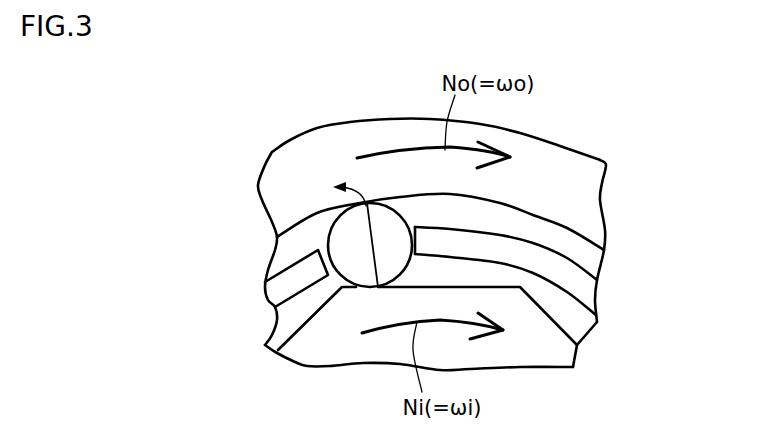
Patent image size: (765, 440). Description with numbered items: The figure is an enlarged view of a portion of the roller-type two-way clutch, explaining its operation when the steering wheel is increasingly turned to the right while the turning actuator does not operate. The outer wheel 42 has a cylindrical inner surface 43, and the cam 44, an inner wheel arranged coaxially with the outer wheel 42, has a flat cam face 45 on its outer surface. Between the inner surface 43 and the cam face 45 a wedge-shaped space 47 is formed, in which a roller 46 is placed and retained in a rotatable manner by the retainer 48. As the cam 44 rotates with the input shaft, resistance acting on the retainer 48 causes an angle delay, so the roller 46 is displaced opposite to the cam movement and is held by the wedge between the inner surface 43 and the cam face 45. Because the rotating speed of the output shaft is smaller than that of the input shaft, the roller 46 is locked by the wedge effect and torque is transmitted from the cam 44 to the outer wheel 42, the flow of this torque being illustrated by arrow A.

The outer wheel 42 is at (549, 150).
The inner surface 43 is at (574, 228).
The cam 44 is at (553, 347).
The cam face 45 is at (490, 288).
The roller 46 is at (355, 263).
The wedge-shaped space 47 is at (413, 203).
The retainer 48 is at (577, 281).
The arrow A is at (365, 229).